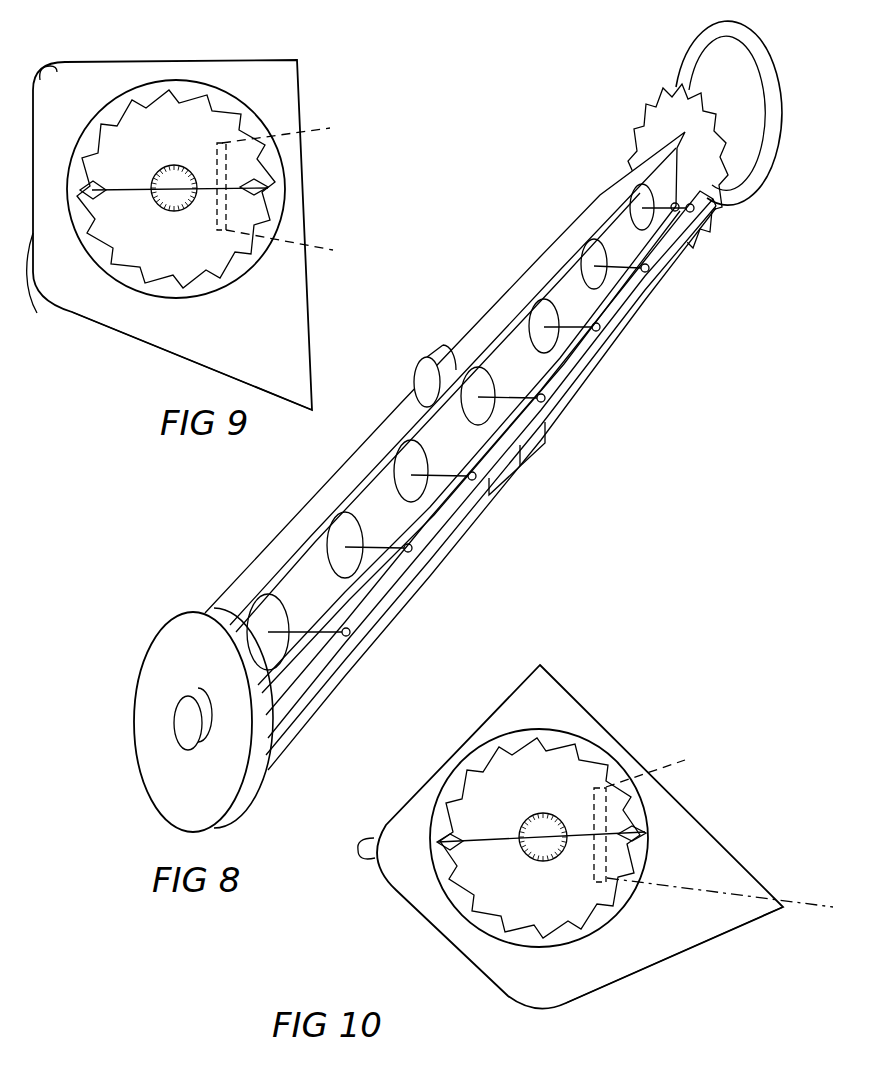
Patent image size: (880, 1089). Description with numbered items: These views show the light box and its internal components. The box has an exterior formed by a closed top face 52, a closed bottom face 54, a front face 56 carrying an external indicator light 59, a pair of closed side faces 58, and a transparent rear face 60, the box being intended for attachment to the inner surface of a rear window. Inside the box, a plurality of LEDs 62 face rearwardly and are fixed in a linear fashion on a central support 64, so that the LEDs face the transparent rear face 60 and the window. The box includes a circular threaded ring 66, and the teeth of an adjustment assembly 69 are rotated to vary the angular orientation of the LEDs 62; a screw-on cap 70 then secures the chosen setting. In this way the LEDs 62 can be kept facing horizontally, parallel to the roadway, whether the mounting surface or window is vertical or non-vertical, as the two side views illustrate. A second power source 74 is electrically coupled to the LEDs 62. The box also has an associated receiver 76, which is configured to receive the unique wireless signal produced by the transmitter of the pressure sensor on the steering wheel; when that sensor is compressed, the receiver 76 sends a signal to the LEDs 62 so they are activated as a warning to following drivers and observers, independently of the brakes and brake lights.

In FIG. 9, the closed top face 52 is at (185, 62).
In FIG. 10, the closed top face 52 is at (457, 747).
In FIG. 9, the closed bottom face 54 is at (153, 350).
In FIG. 10, the closed bottom face 54 is at (643, 973).
In FIG. 9, the front face 56 is at (52, 290).
In FIG. 10, the front face 56 is at (453, 950).
In FIG. 9, the closed side faces 58 is at (176, 214).
In FIG. 10, the closed side faces 58 is at (548, 838).
In FIG. 9, the external indicator light 59 is at (53, 70).
In FIG. 10, the external indicator light 59 is at (373, 868).
In FIG. 9, the transparent rear face 60 is at (306, 202).
In FIG. 10, the transparent rear face 60 is at (547, 675).
In FIG. 8, the LEDs 62 is at (432, 513).
In FIG. 8, the central support 64 is at (627, 302).
In FIG. 9, the circular threaded ring 66 is at (263, 265).
In FIG. 10, the circular threaded ring 66 is at (605, 747).
In FIG. 8, the adjustment assembly 69 is at (712, 240).
In FIG. 8, the screw-on cap 70 is at (686, 46).
In FIG. 8, the second power source 74 is at (447, 340).
In FIG. 8, the receiver 76 is at (535, 450).